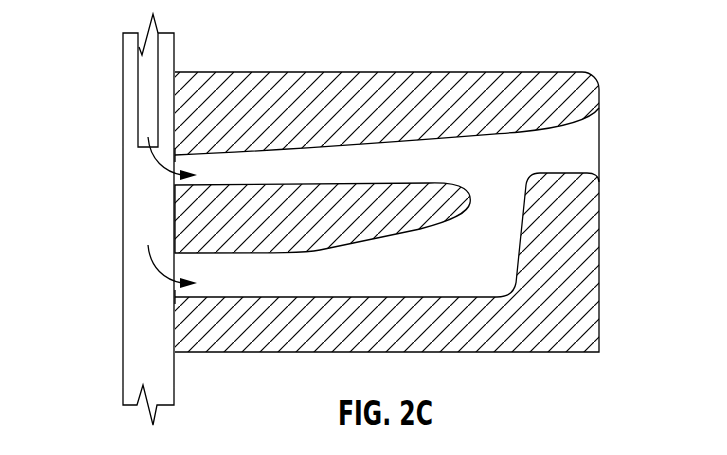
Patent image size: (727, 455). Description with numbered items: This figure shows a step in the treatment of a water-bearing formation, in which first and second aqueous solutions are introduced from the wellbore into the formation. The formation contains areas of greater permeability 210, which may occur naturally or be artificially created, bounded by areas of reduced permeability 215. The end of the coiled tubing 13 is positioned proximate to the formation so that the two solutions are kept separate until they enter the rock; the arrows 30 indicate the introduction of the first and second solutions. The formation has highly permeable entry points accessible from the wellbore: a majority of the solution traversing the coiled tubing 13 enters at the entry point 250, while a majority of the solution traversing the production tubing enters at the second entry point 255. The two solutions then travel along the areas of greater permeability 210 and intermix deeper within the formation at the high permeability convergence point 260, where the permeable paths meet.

The coiled tubing 13 is at (138, 103).
The arrows 30 is at (162, 167).
The areas of greater permeability 210 is at (520, 164).
The areas of reduced permeability 215 is at (307, 126).
The entry point 250 is at (176, 153).
The second entry point 255 is at (176, 298).
The high permeability convergence point 260 is at (498, 202).